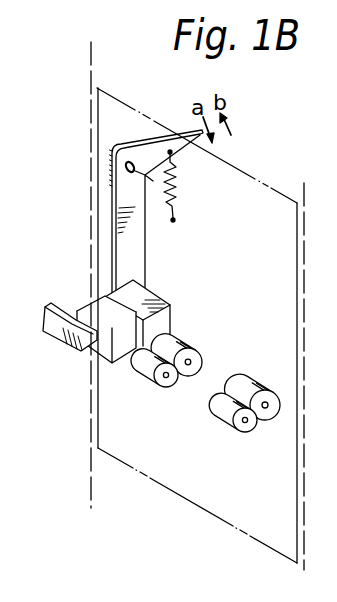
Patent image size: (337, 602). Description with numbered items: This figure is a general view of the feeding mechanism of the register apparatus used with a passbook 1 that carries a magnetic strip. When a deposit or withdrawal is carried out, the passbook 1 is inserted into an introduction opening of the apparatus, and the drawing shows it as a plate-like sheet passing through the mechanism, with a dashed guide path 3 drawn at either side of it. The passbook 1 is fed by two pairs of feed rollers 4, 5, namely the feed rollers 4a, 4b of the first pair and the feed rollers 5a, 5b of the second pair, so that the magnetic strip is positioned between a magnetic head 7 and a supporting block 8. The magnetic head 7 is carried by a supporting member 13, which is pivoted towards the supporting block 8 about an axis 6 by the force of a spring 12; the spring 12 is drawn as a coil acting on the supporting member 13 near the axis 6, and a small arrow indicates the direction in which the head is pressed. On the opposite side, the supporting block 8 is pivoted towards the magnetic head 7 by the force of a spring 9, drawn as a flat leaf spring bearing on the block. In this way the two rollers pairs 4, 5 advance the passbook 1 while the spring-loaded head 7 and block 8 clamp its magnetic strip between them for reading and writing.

The passbook 1 is at (278, 191).
The guide line / path 3 is at (305, 182).
The feed rollers 4 is at (173, 381).
The feed roller 4a is at (186, 344).
The feed roller 4b is at (167, 400).
The feed rollers 5 is at (240, 419).
The feed roller 5a is at (258, 381).
The feed roller 5b is at (224, 425).
The axis 6 is at (114, 151).
The magnetic head 7 is at (155, 296).
The supporting block 8 is at (108, 370).
The spring 9 is at (60, 330).
The spring 12 is at (178, 190).
The supporting member 13 is at (146, 246).